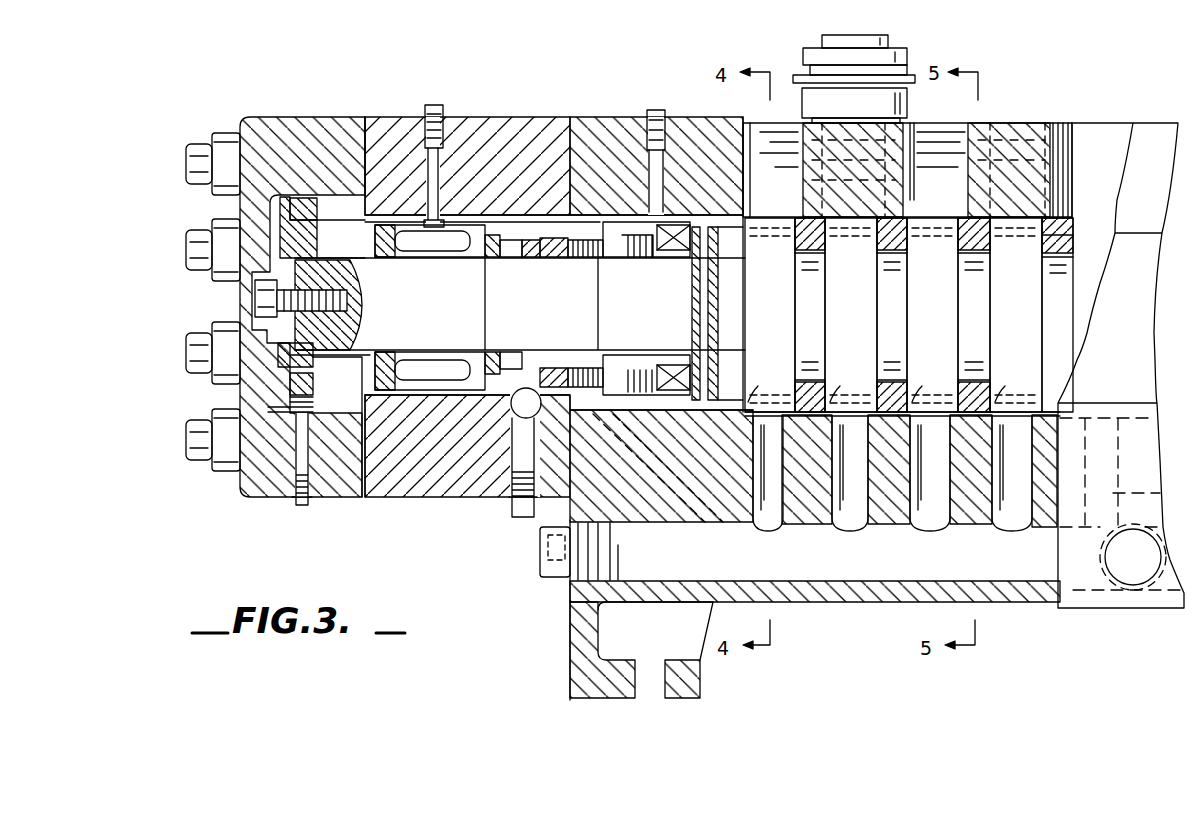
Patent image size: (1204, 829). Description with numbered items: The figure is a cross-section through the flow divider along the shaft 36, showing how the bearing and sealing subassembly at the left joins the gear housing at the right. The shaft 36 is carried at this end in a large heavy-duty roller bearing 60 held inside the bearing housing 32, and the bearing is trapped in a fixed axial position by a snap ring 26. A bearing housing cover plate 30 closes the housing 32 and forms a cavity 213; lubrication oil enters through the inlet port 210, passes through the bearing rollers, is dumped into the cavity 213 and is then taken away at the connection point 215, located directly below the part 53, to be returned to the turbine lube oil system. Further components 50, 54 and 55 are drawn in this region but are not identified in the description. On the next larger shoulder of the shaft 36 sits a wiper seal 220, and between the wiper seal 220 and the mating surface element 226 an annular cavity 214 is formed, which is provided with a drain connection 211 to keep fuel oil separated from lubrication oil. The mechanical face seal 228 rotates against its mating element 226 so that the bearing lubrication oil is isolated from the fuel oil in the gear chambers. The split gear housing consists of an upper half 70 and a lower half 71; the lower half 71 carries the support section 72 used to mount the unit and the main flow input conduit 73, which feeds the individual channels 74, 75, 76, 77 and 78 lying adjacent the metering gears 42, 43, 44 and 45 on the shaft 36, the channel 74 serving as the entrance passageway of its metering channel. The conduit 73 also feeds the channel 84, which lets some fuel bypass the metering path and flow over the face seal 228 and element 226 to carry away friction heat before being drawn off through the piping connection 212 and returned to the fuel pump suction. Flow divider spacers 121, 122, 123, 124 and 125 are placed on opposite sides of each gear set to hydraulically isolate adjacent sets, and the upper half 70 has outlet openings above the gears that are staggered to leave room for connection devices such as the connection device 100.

The bearing housing cover plate 30 is at (303, 115).
The bearing housing 32 is at (496, 116).
The inlet port 210 is at (447, 90).
The tubing or piping connection 212 is at (655, 108).
The annular cavity 214 is at (528, 246).
The snap ring 26 is at (371, 345).
The shaft pin 55 is at (262, 297).
The screw 54 is at (318, 211).
The bearing retainer 50 is at (316, 253).
The part 53 is at (314, 392).
The roller bearing 60 is at (401, 377).
The wiper seal 220 is at (494, 249).
The mating surface element 226 is at (553, 368).
The mechanical face seal 228 is at (677, 245).
The shaft 36 is at (657, 331).
The cavity 213 is at (347, 407).
The connection point 215 is at (297, 504).
The drain connection 211 is at (517, 521).
The channel 84 is at (694, 500).
The main flow input conduit 73 is at (826, 582).
The lower half 71 is at (1017, 604).
The support section 72 is at (703, 694).
The entrance passageway 74 is at (783, 512).
The channel 75 is at (866, 512).
The channel 76 is at (947, 512).
The channel 77 is at (1025, 512).
The upper half 70 is at (1011, 124).
The connection device 100 is at (852, 34).
The metering gear 42 is at (780, 336).
The metering gear 43 is at (864, 336).
The metering gear 44 is at (945, 336).
The metering gear 45 is at (1027, 336).
The flow divider spacer 121 is at (769, 385).
The flow divider spacer 122 is at (851, 385).
The flow divider spacer 123 is at (933, 385).
The flow divider spacer 124 is at (1015, 385).
The flow divider spacer 125 is at (1043, 247).
The channel 78 is at (1163, 489).